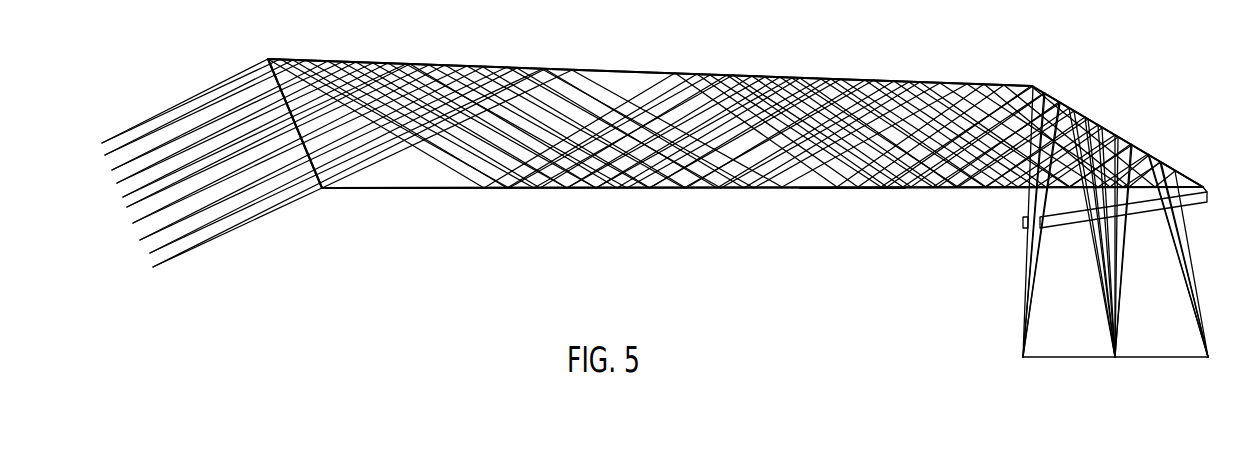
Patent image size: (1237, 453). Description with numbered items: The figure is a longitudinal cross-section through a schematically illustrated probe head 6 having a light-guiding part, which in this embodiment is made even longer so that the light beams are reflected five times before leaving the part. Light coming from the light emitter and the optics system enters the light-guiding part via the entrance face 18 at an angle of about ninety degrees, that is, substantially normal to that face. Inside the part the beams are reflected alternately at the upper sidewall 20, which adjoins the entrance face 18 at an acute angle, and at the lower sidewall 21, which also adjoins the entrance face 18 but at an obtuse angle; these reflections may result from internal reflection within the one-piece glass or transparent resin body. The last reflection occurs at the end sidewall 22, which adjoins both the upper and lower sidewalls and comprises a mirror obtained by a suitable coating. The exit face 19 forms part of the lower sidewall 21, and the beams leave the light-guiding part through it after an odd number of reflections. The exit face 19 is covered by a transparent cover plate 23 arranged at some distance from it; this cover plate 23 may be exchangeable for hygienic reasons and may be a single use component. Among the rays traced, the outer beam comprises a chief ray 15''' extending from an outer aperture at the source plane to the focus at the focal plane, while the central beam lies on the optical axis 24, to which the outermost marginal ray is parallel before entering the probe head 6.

The probe head 6 is at (790, 66).
The upper sidewall 20 is at (449, 64).
The entrance face 18 is at (320, 189).
The lower sidewall 21 is at (461, 189).
The end sidewall 22 is at (1083, 110).
The chief ray 15''' is at (870, 213).
The optical axis 24 is at (762, 128).
The exit face 19 is at (1078, 189).
The transparent cover plate 23 is at (1206, 185).